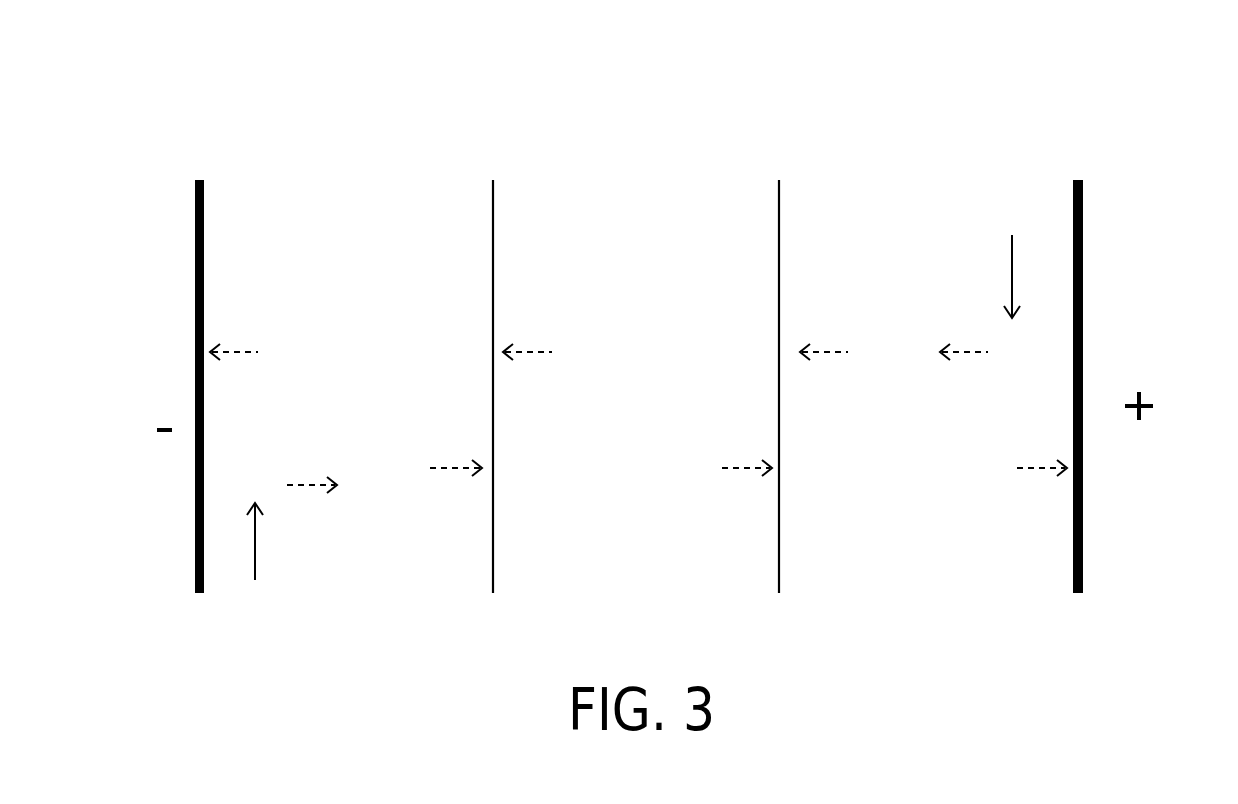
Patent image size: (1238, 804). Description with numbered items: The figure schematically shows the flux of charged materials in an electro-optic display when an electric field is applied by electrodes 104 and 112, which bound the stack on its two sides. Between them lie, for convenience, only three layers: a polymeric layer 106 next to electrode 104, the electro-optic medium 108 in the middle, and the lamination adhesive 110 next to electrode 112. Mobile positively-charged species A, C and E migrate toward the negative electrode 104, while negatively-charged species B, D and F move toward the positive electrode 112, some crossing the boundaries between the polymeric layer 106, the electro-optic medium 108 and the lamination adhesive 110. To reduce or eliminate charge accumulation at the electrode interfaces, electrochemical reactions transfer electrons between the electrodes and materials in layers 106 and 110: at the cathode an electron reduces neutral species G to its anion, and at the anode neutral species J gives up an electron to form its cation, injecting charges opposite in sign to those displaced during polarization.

The electrode 104 is at (197, 234).
The polymeric layer 106 is at (447, 160).
The electro-optic medium 108 is at (553, 160).
The lamination adhesive 110 is at (849, 160).
The electrode 112 is at (1083, 257).